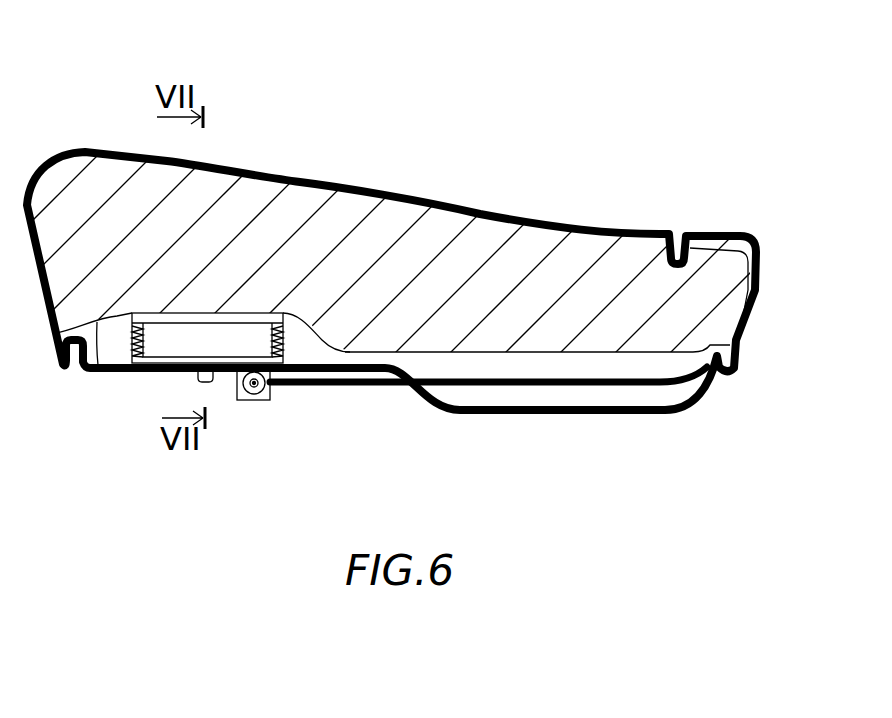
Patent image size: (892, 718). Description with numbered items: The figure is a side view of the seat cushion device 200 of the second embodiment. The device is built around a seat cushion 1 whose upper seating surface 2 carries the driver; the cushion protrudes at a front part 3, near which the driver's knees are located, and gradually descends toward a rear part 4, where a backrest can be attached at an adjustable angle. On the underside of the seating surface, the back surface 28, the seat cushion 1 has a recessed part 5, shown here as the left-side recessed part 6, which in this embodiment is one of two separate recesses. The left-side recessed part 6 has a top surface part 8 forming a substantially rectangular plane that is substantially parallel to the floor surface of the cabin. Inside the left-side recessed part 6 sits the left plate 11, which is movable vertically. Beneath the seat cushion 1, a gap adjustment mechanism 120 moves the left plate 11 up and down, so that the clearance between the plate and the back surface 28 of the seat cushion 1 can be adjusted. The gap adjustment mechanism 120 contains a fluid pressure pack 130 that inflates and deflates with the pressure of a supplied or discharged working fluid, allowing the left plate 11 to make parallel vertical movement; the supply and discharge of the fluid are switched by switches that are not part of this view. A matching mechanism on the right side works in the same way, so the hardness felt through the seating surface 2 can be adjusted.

The seat cushion 1 is at (396, 252).
The seating surface 2 is at (482, 213).
The front part 3 is at (98, 153).
The rear part 4 is at (638, 228).
The recessed part 5 is at (139, 441).
The left-side recessed part 6 is at (93, 370).
The top surface part 8 is at (270, 370).
The left plate 11 is at (233, 318).
The back surface 28 is at (323, 343).
The gap adjustment mechanism 120 is at (155, 370).
The fluid pressure pack 130 is at (225, 340).
The seat cushion device 200 is at (710, 108).